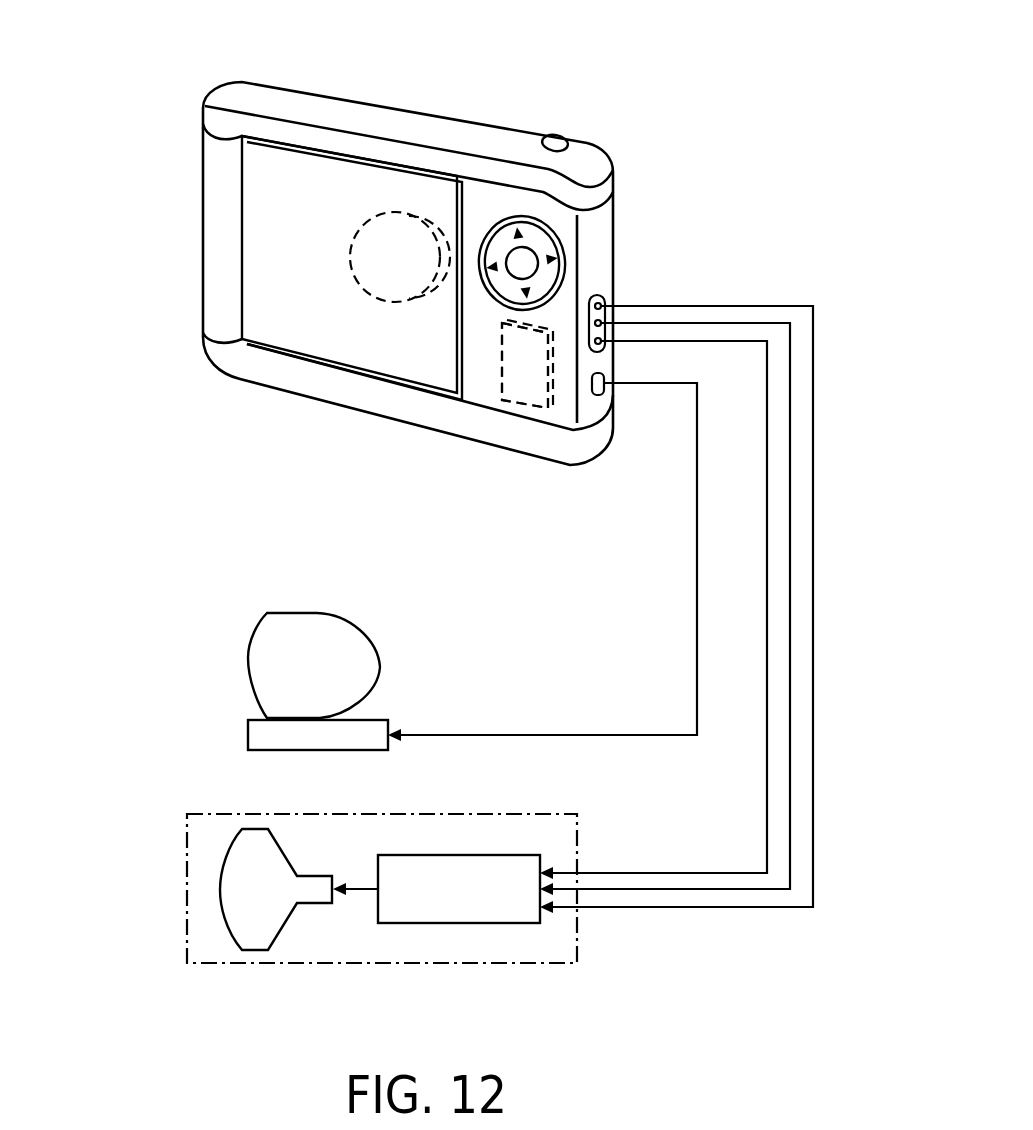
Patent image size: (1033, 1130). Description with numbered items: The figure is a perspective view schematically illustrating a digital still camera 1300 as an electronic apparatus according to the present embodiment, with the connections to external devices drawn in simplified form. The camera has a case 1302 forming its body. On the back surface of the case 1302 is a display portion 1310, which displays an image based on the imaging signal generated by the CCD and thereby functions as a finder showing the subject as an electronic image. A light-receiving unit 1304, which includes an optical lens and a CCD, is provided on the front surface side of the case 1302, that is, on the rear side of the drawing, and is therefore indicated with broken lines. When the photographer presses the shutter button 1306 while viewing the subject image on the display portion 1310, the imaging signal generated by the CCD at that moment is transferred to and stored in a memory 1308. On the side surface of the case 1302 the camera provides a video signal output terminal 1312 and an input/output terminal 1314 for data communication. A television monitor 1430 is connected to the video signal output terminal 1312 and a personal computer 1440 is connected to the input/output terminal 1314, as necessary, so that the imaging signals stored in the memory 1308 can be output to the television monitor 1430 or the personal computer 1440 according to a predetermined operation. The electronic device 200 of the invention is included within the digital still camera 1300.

The digital still camera 1300 is at (518, 58).
The case 1302 is at (222, 122).
The light-receiving unit 1304 is at (407, 212).
The shutter button 1306 is at (557, 143).
The memory 1308 is at (527, 393).
The display portion 1310 is at (328, 338).
The video signal output terminal 1312 is at (602, 301).
The input/output terminal for data communication 1314 is at (605, 390).
The electronic device 200 is at (483, 378).
The television monitor 1430 is at (187, 890).
The personal computer 1440 is at (248, 648).